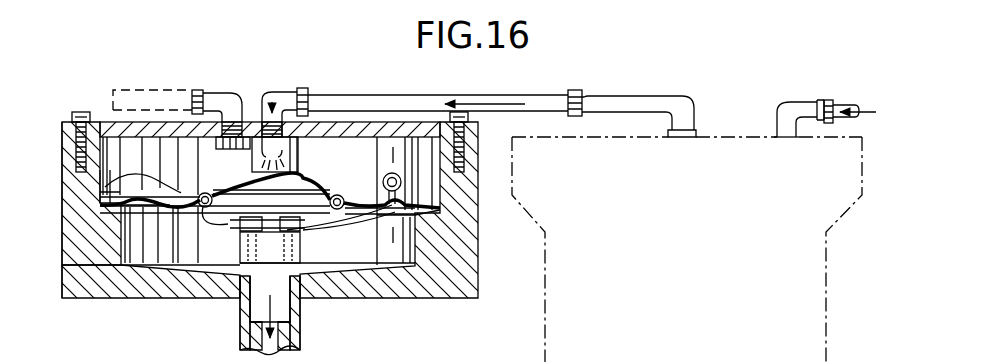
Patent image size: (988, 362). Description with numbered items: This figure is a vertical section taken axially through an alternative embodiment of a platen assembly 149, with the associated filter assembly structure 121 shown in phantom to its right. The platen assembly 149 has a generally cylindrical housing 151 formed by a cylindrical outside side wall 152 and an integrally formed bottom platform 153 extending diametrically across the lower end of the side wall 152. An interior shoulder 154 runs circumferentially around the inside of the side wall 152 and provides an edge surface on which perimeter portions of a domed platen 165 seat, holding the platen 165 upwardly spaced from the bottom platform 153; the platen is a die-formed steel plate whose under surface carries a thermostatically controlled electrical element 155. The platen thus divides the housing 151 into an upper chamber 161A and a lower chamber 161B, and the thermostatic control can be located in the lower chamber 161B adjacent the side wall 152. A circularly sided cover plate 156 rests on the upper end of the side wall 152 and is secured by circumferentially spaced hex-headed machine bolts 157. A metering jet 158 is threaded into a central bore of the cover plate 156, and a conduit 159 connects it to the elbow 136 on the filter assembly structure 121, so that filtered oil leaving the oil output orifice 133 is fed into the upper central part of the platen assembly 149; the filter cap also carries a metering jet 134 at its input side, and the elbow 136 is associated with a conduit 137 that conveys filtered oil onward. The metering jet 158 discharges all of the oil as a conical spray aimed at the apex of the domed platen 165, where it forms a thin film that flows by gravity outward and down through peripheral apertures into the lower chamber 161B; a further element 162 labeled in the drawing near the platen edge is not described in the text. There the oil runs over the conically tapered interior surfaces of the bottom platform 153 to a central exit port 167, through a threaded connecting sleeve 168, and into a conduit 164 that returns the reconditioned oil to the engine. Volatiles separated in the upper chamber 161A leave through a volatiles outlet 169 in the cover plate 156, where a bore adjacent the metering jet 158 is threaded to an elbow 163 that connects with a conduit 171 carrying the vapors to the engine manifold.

The filter assembly structure 121 is at (830, 303).
The oil output orifice 133 is at (677, 139).
The metering jet 134 is at (788, 101).
The elbow 136 is at (652, 97).
The conduit 137 is at (842, 92).
The platen assembly 149 is at (60, 140).
The housing 151 is at (60, 254).
The outside side wall 152 is at (100, 245).
The bottom platform 153 is at (207, 283).
The interior shoulder 154 is at (110, 213).
The thermostatically controlled electrical element 155 is at (182, 213).
The cover plate 156 is at (140, 127).
The hex-headed machine bolts 157 is at (80, 113).
The metering jet 158 is at (274, 100).
The conduit 159 is at (542, 95).
The upper chamber 161A is at (327, 147).
The lower chamber 161B is at (157, 245).
The diaphragm 162 is at (392, 187).
The elbow 163 is at (220, 100).
The conduit 164 is at (300, 333).
The domed platen 165 is at (157, 184).
The exit port 167 is at (280, 306).
The connecting sleeve 168 is at (242, 308).
The volatiles outlet 169 is at (246, 118).
The conduit 171 is at (133, 95).